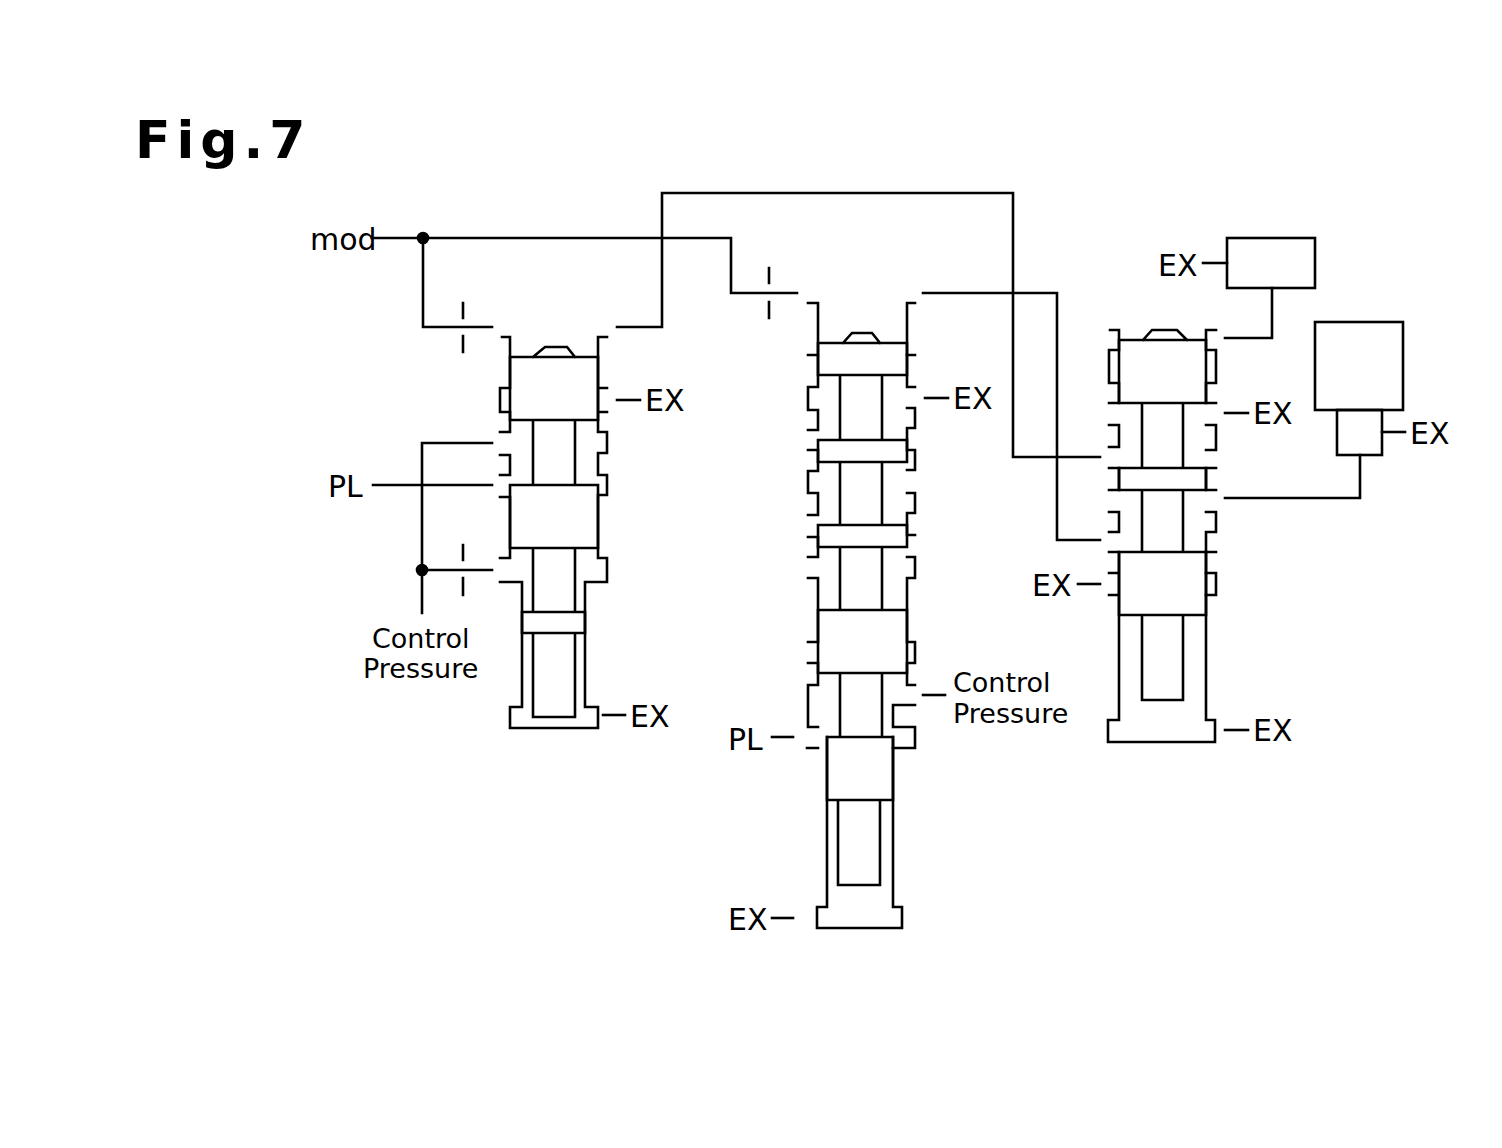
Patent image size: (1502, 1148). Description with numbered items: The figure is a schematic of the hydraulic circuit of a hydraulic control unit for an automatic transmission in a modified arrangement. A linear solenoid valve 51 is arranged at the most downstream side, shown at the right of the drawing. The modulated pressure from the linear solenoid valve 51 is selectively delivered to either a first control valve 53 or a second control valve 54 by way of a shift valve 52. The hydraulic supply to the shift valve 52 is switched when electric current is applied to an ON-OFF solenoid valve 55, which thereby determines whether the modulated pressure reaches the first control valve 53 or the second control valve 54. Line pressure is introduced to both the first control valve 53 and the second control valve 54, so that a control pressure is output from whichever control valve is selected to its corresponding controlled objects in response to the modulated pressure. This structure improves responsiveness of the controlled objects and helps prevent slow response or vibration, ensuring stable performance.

The linear solenoid valve 51 is at (1405, 362).
The shift valve 52 is at (1128, 330).
The first control valve 53 is at (502, 315).
The second control valve 54 is at (808, 282).
The ON-OFF solenoid valve 55 is at (1263, 238).